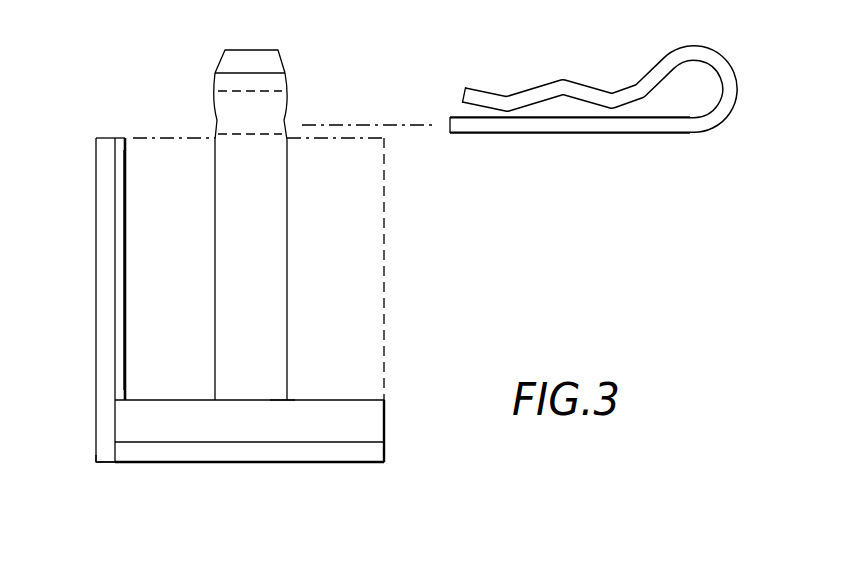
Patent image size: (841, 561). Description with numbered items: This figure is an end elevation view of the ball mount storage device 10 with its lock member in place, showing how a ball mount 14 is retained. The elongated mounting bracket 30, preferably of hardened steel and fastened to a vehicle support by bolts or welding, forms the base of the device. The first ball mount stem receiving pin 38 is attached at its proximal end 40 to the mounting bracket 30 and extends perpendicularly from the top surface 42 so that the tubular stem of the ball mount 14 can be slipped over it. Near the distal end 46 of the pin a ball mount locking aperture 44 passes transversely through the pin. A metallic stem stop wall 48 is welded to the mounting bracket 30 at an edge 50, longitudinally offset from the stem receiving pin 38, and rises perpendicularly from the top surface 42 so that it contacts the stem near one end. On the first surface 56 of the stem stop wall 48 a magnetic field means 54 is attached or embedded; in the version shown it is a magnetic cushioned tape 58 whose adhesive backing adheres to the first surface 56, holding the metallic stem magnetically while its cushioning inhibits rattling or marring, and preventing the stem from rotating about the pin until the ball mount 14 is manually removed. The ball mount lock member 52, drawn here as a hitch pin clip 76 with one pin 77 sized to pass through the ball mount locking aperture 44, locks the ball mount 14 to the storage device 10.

The ball mount storage device 10 is at (96, 155).
The ball mount 14 is at (368, 265).
The mounting bracket 30 is at (250, 462).
The first ball mount stem receiving pin 38 is at (225, 52).
The proximal end 40 is at (232, 398).
The top surface 42 is at (278, 400).
The ball mount locking aperture 44 is at (242, 91).
The distal end 46 is at (287, 80).
The stem stop wall 48 is at (84, 300).
The edge 50 is at (117, 447).
The ball mount lock member 52 is at (590, 102).
The magnetic field means 54 is at (126, 245).
The first surface 56 is at (114, 272).
The magnetic cushioned tape 58 is at (125, 314).
The hitch pin clip 76 is at (583, 135).
The pin 77 is at (475, 125).